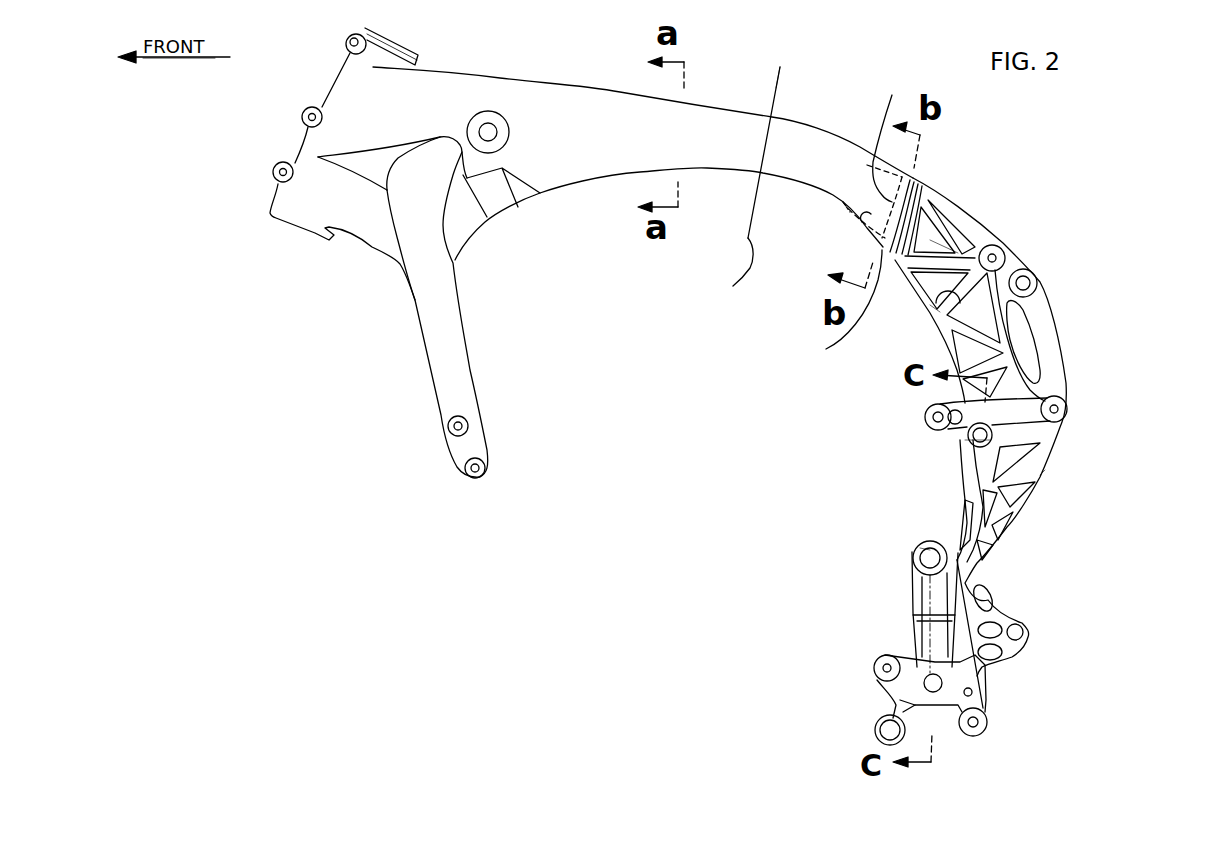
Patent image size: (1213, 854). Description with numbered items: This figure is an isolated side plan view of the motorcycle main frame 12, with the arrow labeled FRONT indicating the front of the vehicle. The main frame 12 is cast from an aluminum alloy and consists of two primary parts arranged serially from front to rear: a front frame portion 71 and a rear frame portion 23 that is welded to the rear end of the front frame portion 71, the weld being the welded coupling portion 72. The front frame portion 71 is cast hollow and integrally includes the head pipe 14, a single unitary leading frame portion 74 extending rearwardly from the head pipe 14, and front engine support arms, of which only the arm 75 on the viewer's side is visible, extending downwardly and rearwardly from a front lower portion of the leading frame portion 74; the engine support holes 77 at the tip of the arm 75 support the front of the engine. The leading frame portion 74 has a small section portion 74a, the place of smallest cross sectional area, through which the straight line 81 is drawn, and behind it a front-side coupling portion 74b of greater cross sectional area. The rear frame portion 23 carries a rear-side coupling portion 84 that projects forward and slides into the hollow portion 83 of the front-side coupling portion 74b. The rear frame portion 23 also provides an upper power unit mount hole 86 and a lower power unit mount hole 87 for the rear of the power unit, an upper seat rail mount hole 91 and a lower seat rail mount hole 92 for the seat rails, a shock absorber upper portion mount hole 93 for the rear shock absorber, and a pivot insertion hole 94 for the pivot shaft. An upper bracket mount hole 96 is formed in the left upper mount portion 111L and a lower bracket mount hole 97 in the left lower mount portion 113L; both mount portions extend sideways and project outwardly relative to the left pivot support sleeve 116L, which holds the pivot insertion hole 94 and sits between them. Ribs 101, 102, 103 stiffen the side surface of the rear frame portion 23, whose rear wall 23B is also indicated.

The main frame 12 is at (611, 603).
The head pipe 14 is at (350, 95).
The rear frame portion 23 is at (1057, 311).
The rear wall 23B is at (957, 203).
The front frame portion 71 is at (586, 86).
The welded coupling portion 72 is at (917, 178).
The leading frame portion 74 is at (713, 118).
The small section portion 74a is at (774, 116).
The front-side coupling portion 74b is at (834, 307).
The front engine support arm 75 is at (440, 333).
The engine support hole 77 is at (450, 430).
The straight line 81 is at (740, 290).
The hollow portion 83 is at (857, 212).
The rear-side coupling portion 84 is at (892, 95).
The upper power unit mount hole 86 is at (925, 417).
The lower power unit mount hole 87 is at (876, 660).
The upper seat rail mount hole 91 is at (1003, 245).
The lower seat rail mount hole 92 is at (1067, 410).
The shock absorber upper portion mount hole 93 is at (1037, 273).
The pivot insertion hole 94 is at (914, 556).
The upper bracket mount hole 96 is at (968, 442).
The lower bracket mount hole 97 is at (924, 685).
The rib 101 is at (930, 305).
The rib 102 is at (1040, 475).
The rib 103 is at (915, 600).
The left upper mount portion 111L is at (969, 444).
The left lower mount portion 113L is at (1012, 663).
The left pivot support sleeve 116L is at (920, 547).